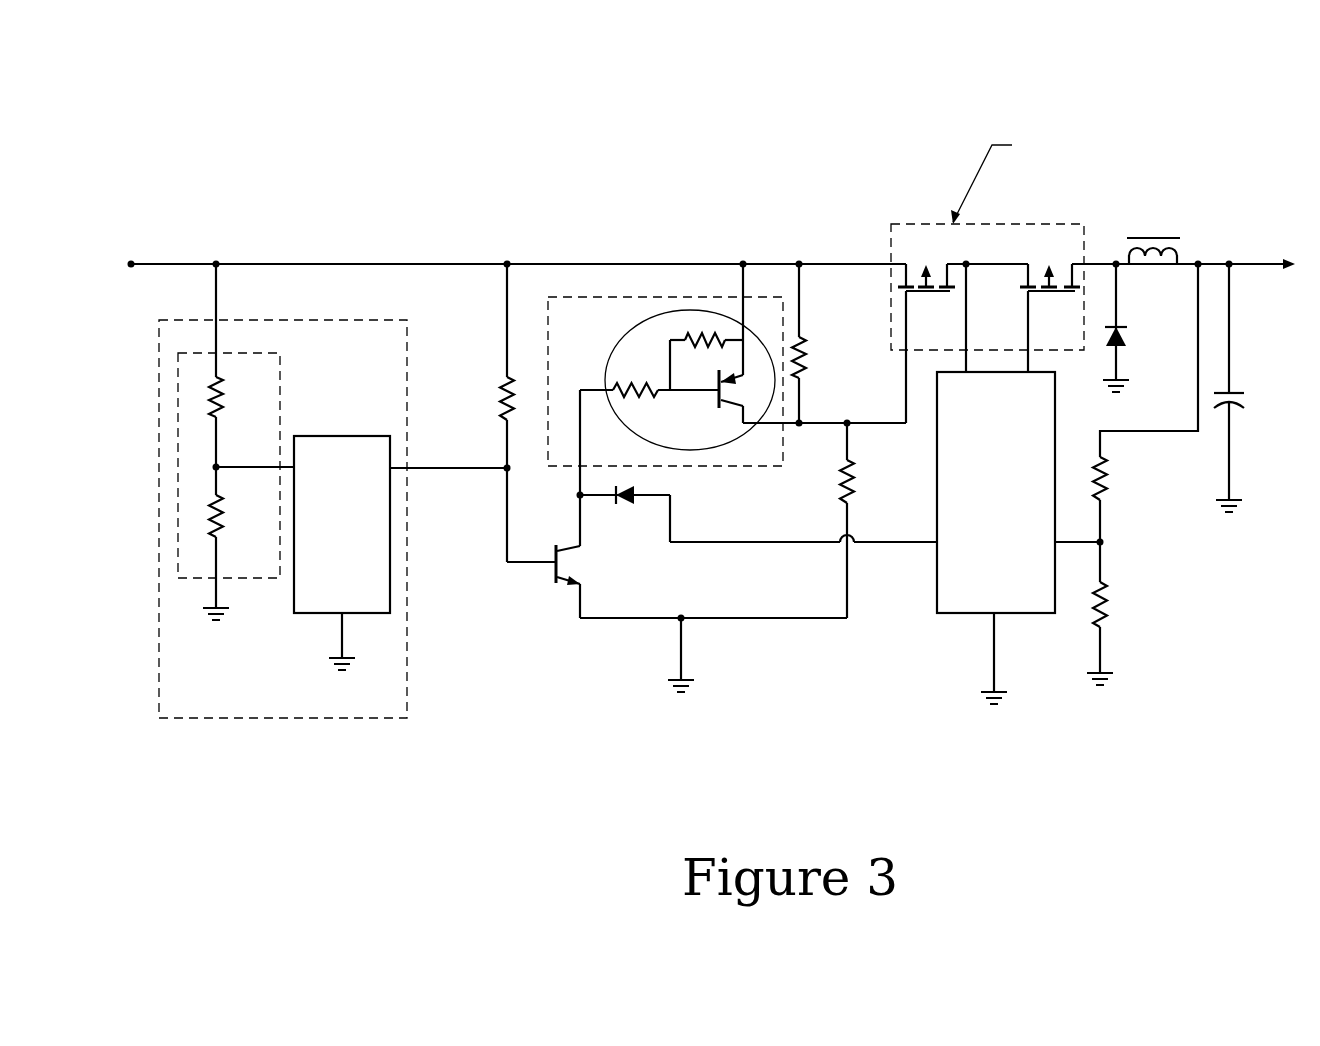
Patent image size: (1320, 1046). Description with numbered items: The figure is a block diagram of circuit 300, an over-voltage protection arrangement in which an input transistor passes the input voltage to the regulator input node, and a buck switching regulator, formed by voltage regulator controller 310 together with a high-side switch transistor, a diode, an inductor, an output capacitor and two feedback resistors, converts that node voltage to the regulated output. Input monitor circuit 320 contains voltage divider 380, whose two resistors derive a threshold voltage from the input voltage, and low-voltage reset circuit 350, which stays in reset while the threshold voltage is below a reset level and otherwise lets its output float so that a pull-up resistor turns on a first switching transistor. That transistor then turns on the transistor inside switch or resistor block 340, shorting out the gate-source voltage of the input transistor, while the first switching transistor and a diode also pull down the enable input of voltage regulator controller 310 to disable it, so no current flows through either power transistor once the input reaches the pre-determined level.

The circuit 300 is at (760, 92).
The voltage regulator controller 310 is at (1009, 602).
The input monitor circuit 320 is at (384, 354).
The switch or resistor 340 is at (591, 351).
The low-voltage reset circuit 350 is at (360, 592).
The voltage divider 380 is at (269, 567).